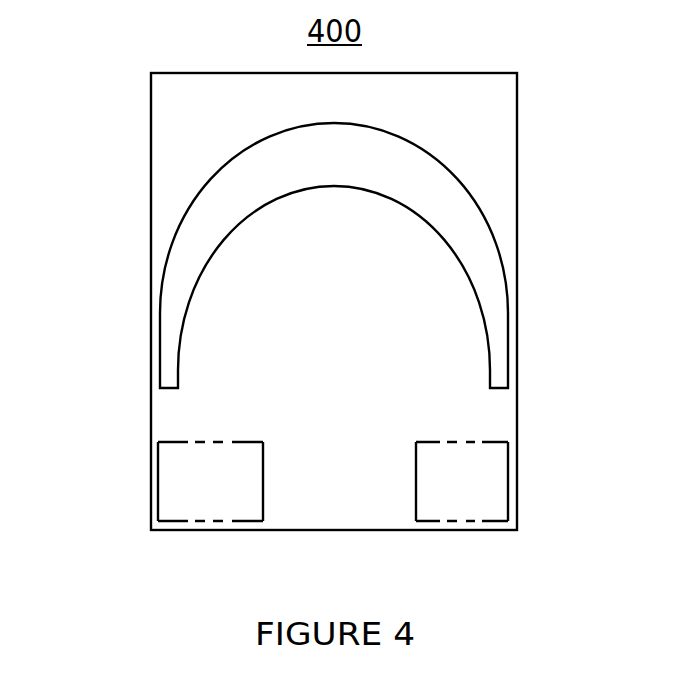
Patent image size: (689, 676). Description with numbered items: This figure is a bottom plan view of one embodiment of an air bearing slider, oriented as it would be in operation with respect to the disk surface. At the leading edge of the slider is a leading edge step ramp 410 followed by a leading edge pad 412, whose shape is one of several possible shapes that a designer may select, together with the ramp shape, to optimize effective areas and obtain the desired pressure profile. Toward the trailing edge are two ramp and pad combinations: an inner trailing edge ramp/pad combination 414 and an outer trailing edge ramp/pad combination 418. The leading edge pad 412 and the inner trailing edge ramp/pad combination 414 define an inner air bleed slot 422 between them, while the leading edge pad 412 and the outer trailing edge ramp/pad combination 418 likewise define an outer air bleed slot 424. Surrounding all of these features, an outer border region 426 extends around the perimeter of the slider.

The leading edge step ramp 410 is at (422, 112).
The leading edge pad 412 is at (488, 224).
The inner trailing edge ramp/pad combination 414 is at (507, 502).
The outer trailing edge ramp/pad combination 418 is at (155, 488).
The inner air bleed slot 422 is at (496, 413).
The outer air bleed slot 424 is at (168, 412).
The outer border region 426 is at (156, 316).